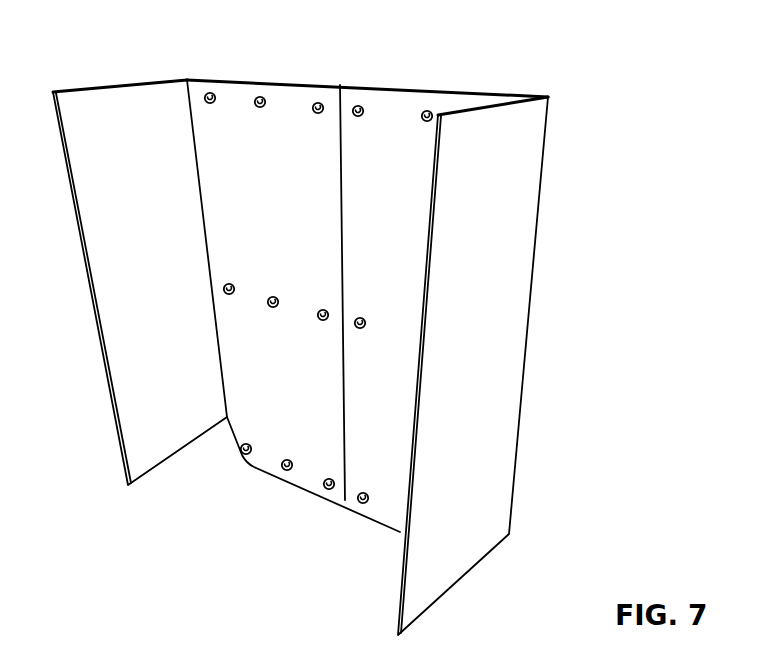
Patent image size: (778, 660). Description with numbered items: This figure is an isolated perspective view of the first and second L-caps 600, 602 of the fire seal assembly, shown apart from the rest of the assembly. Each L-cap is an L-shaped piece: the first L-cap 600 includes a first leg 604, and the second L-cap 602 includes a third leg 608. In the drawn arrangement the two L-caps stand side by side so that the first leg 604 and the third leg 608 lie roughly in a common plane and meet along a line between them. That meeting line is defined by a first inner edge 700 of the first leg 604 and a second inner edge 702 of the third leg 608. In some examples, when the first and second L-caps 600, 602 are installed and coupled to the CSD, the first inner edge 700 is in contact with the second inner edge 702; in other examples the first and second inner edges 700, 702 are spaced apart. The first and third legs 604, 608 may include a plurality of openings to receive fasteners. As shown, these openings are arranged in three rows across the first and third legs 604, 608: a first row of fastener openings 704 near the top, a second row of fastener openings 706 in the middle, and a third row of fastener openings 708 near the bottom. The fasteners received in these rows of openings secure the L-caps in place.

The first L-cap 600 is at (497, 133).
The second L-cap 602 is at (96, 122).
The first leg 604 is at (398, 117).
The third leg 608 is at (243, 102).
The first inner edge 700 is at (340, 174).
The second inner edge 702 is at (341, 220).
The first row of fastener openings 704 is at (257, 113).
The second row of fastener openings 706 is at (270, 308).
The third row of fastener openings 708 is at (282, 474).